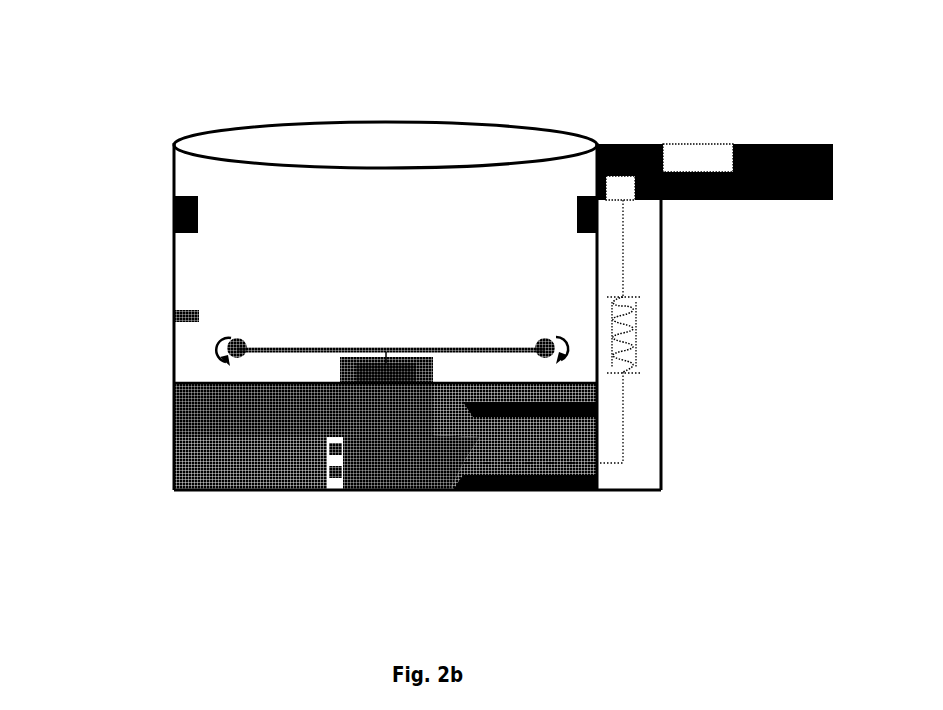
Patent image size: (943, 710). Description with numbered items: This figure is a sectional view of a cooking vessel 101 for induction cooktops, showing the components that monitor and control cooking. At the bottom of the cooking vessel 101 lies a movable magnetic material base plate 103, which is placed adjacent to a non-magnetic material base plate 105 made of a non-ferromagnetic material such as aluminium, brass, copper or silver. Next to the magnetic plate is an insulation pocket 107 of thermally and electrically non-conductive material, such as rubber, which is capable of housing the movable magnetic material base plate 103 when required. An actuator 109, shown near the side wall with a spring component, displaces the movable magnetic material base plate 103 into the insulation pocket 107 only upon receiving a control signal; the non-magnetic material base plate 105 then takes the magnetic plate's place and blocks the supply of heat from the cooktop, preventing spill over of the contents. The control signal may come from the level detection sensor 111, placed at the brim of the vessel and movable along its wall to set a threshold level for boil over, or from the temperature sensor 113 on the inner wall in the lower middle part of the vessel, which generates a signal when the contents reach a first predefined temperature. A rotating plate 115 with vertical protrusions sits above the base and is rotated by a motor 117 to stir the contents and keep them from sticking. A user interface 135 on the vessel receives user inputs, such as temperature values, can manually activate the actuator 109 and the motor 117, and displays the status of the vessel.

The cooking vessel 101 is at (480, 135).
The movable magnetic material base plate 103 is at (408, 470).
The non-magnetic material base plate 105 is at (185, 450).
The insulation pocket 107 is at (563, 452).
The actuator 109 is at (634, 201).
The level detection sensor 111 is at (577, 210).
The temperature sensor 113 is at (190, 308).
The rotating plate 115 is at (565, 360).
The motor 117 is at (340, 374).
The user interface 135 is at (690, 144).